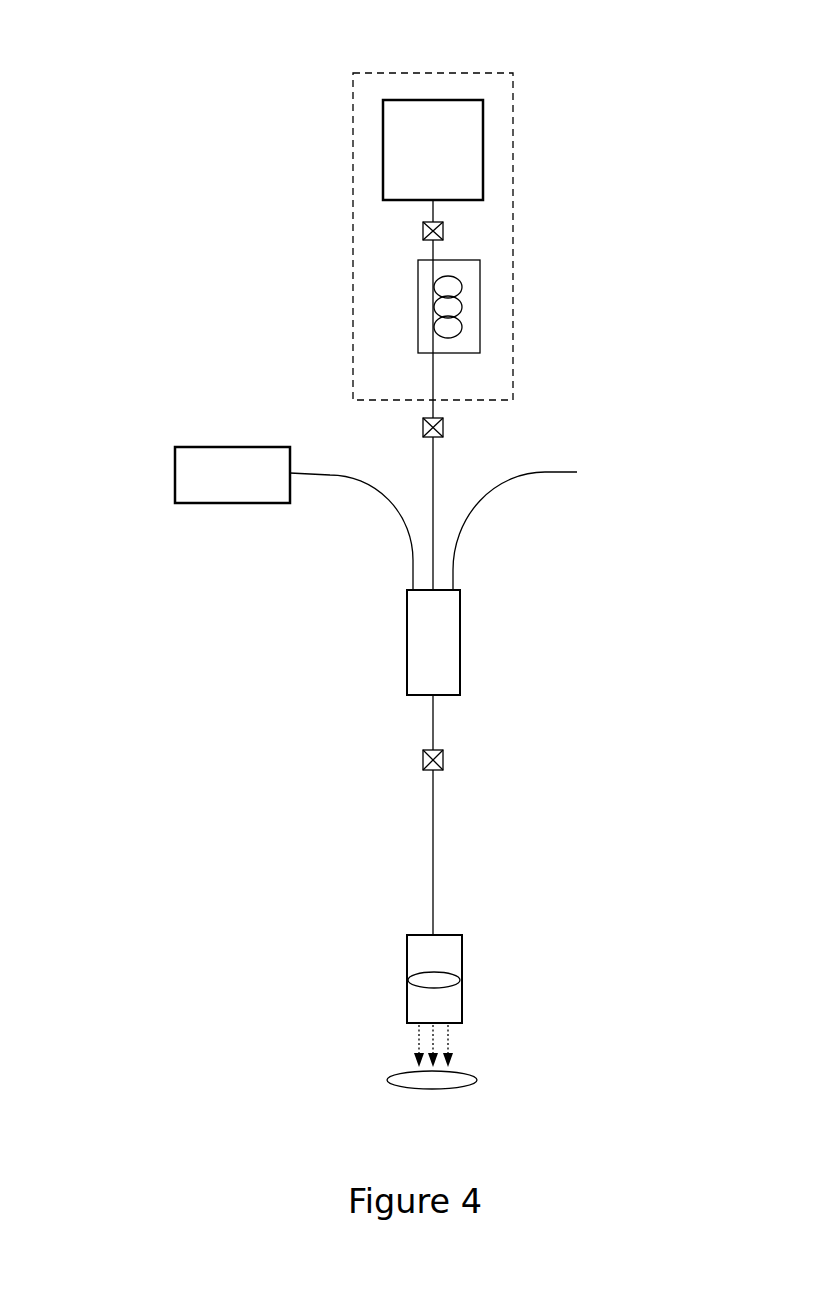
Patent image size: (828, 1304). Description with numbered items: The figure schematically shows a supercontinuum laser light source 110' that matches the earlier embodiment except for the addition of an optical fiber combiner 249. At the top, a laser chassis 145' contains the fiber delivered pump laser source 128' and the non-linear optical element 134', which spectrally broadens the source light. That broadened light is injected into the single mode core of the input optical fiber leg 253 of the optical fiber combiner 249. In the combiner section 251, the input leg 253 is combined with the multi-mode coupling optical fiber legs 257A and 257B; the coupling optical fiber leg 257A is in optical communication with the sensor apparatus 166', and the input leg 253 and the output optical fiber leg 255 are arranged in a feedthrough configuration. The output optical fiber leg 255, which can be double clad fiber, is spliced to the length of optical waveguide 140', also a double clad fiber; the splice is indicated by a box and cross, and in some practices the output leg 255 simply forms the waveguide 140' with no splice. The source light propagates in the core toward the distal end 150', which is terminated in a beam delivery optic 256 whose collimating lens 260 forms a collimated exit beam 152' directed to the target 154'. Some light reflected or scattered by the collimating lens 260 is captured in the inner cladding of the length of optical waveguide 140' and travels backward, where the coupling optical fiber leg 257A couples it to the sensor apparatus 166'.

The supercontinuum laser light source 110' is at (131, 185).
The laser chassis 145' is at (434, 200).
The fiber delivered pump laser source 128' is at (499, 144).
The non-linear optical element 134' is at (535, 306).
The input optical fiber leg 253 is at (433, 492).
The sensor apparatus 166' is at (206, 502).
The coupling optical fiber leg 257A is at (337, 472).
The coupling optical fiber leg 257B is at (547, 472).
The optical fiber combiner 249 is at (495, 603).
The combiner section 251 is at (455, 665).
The output optical fiber leg 255 is at (448, 718).
The length of optical waveguide 140' is at (388, 783).
The distal end 150' is at (495, 892).
The beam delivery optic 256 is at (462, 952).
The collimating lens 260 is at (434, 983).
The exit beam 152' is at (380, 1039).
The target 154' is at (480, 1078).